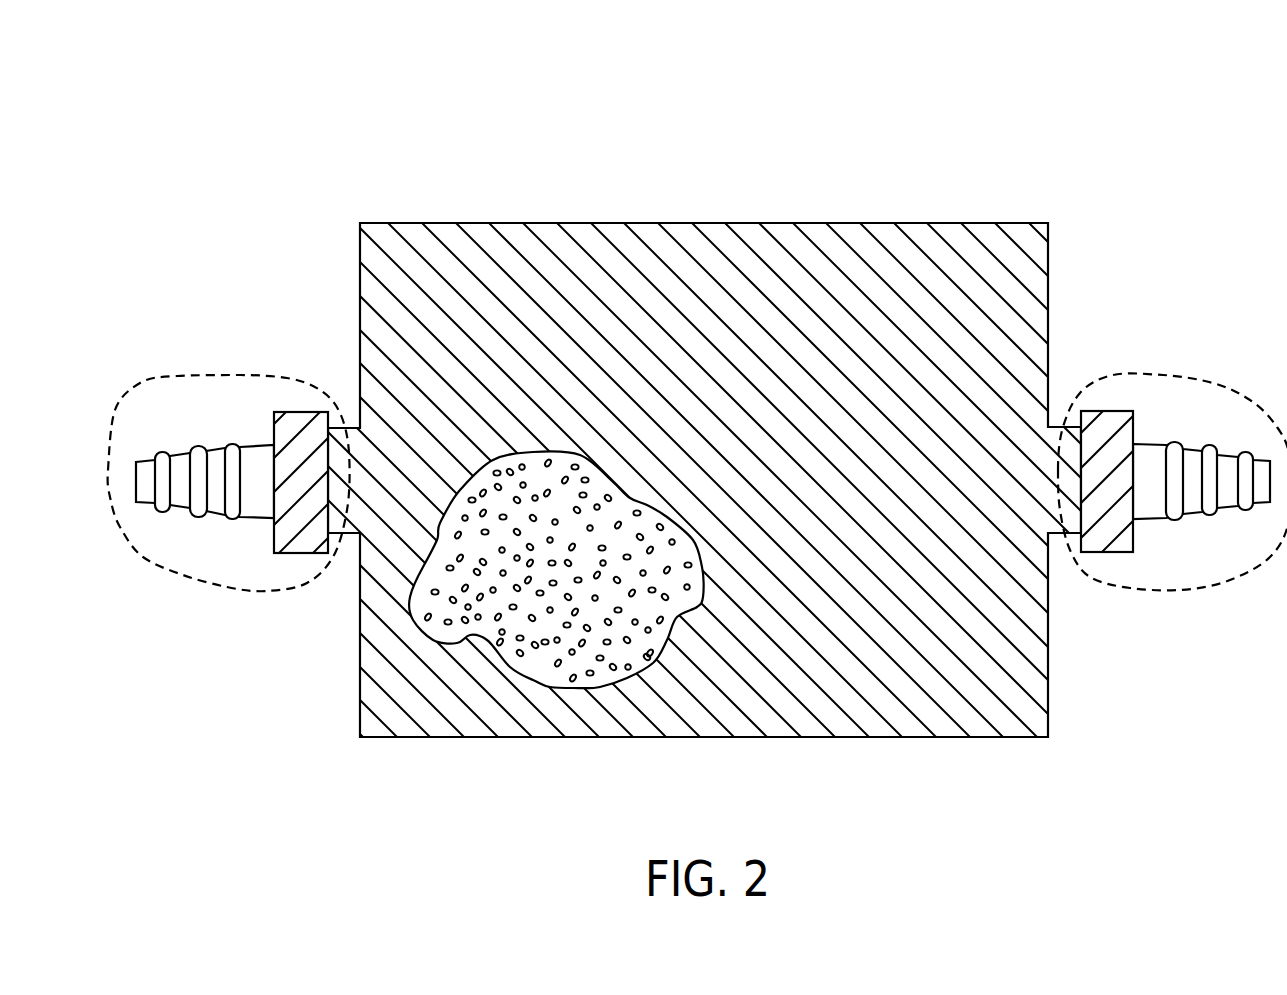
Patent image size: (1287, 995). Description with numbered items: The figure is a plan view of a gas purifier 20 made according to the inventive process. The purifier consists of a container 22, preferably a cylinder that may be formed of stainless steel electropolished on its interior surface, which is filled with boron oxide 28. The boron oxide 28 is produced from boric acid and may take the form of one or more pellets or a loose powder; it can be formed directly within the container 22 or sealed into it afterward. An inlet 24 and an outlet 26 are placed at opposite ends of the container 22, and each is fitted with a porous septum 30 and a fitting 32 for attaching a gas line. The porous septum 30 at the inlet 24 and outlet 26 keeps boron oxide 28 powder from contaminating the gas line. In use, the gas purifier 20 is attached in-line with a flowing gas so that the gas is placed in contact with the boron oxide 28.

The gas purifier 20 is at (312, 138).
The container 22 is at (760, 297).
The inlet 24 is at (276, 592).
The outlet 26 is at (1215, 388).
The boron oxide 28 is at (547, 625).
The porous septum 30 is at (305, 442).
The fitting 32 is at (215, 458).